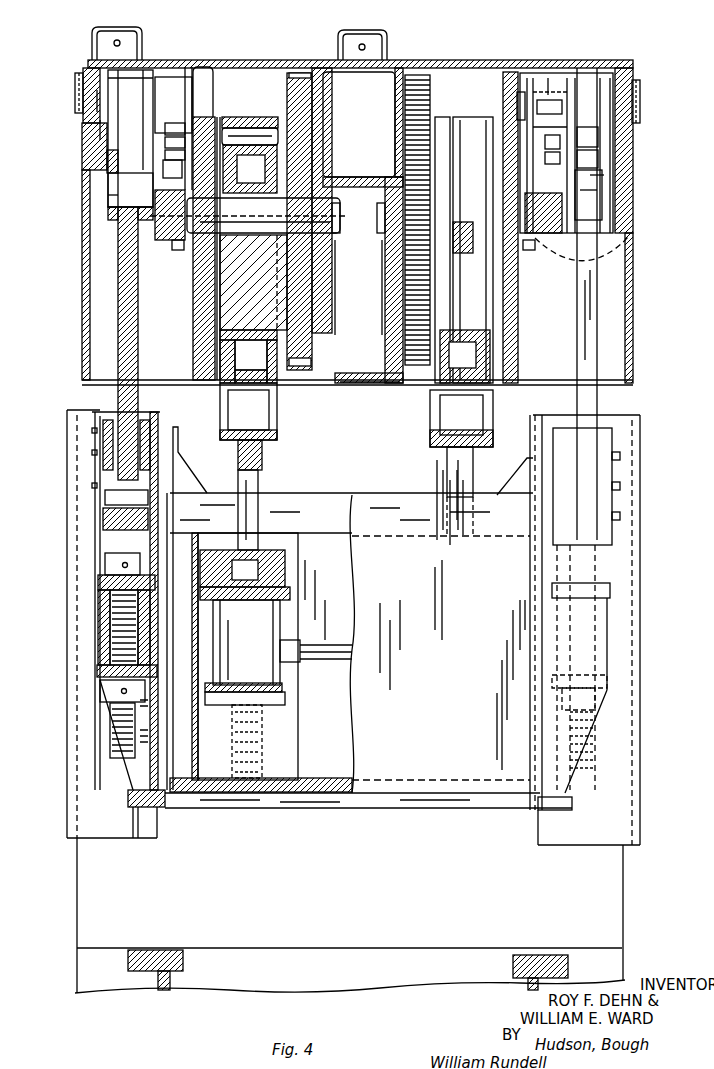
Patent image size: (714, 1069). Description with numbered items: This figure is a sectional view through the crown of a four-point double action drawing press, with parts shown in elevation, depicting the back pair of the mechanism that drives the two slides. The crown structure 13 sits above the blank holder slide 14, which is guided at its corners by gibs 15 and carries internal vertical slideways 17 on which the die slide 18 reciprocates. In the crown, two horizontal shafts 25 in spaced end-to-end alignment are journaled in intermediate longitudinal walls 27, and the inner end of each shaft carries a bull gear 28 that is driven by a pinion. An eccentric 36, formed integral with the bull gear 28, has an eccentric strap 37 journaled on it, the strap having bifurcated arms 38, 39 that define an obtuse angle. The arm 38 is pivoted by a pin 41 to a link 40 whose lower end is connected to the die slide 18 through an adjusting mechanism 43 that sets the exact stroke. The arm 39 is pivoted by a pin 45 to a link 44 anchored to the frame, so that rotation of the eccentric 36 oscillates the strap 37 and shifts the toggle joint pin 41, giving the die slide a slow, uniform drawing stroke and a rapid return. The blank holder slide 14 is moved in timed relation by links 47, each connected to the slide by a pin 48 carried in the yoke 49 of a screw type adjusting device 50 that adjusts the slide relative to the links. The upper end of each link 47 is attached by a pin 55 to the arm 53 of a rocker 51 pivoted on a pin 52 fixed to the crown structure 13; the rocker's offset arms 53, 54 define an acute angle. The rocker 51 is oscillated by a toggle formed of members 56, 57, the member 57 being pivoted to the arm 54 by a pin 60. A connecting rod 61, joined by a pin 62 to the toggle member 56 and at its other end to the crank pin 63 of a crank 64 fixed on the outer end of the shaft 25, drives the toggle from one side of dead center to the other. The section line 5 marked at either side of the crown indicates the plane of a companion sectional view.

The section line 5- 5 is at (0, 455).
The crown structure 13 is at (385, 388).
The blank holder slide 14 is at (303, 810).
The gibs 15 is at (120, 840).
The vertical slideways 17 is at (163, 808).
The die slide 18 is at (318, 776).
The horizontal shafts 25 is at (378, 212).
The intermediate longitudinal walls 27 is at (196, 292).
The bull gear 28 is at (305, 73).
The eccentric 36 is at (228, 310).
The eccentric strap 37 is at (219, 347).
The arm 38 is at (362, 356).
The arm 39 is at (425, 165).
The link 40 is at (256, 485).
The pin 41 is at (270, 412).
The adjusting mechanism 43 is at (282, 612).
The link 44 is at (262, 112).
The pin 45 is at (278, 135).
The links 47 is at (118, 355).
The pins 48 is at (105, 497).
The yoke 49 is at (105, 520).
The screw type adjusting device 50 is at (105, 565).
The rockers 51 is at (97, 102).
The pins 52 is at (76, 85).
The arm 53 is at (105, 130).
The arm 54 is at (210, 115).
The pins 55 is at (108, 200).
The toggle member 56 is at (168, 236).
The toggle member 57 is at (358, 120).
The pin 60 is at (353, 138).
The connecting rod 61 is at (381, 163).
The pin 62 is at (640, 165).
The crank pin 63 is at (628, 254).
The crank 64 is at (184, 250).